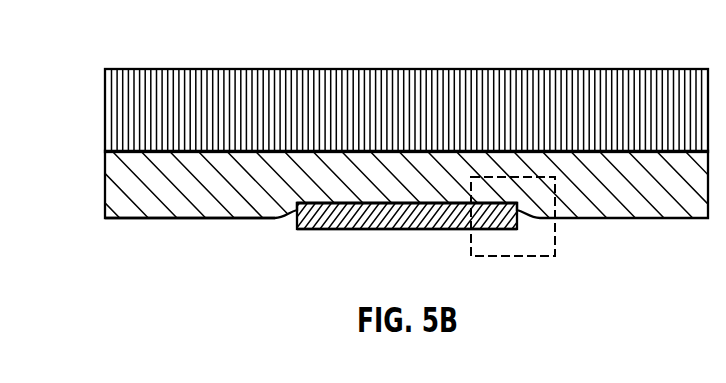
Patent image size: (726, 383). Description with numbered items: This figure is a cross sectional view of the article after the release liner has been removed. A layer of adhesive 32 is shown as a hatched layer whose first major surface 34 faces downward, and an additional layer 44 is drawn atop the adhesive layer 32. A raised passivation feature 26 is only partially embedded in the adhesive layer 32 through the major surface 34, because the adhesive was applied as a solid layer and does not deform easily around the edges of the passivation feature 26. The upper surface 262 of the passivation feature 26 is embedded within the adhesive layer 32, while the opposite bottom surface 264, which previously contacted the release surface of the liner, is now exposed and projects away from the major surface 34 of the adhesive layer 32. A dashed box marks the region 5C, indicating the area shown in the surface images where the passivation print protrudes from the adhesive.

The top layer (vertically hatched layer) 44 is at (134, 99).
The layer of adhesive 32 is at (134, 173).
The first major surface 34 is at (167, 220).
The passivation feature 26 is at (408, 229).
The upper surface 262 is at (392, 203).
The bottom surface 264 is at (323, 229).
The detail region shown in FIG. 5C or 5D 5C is at (532, 257).